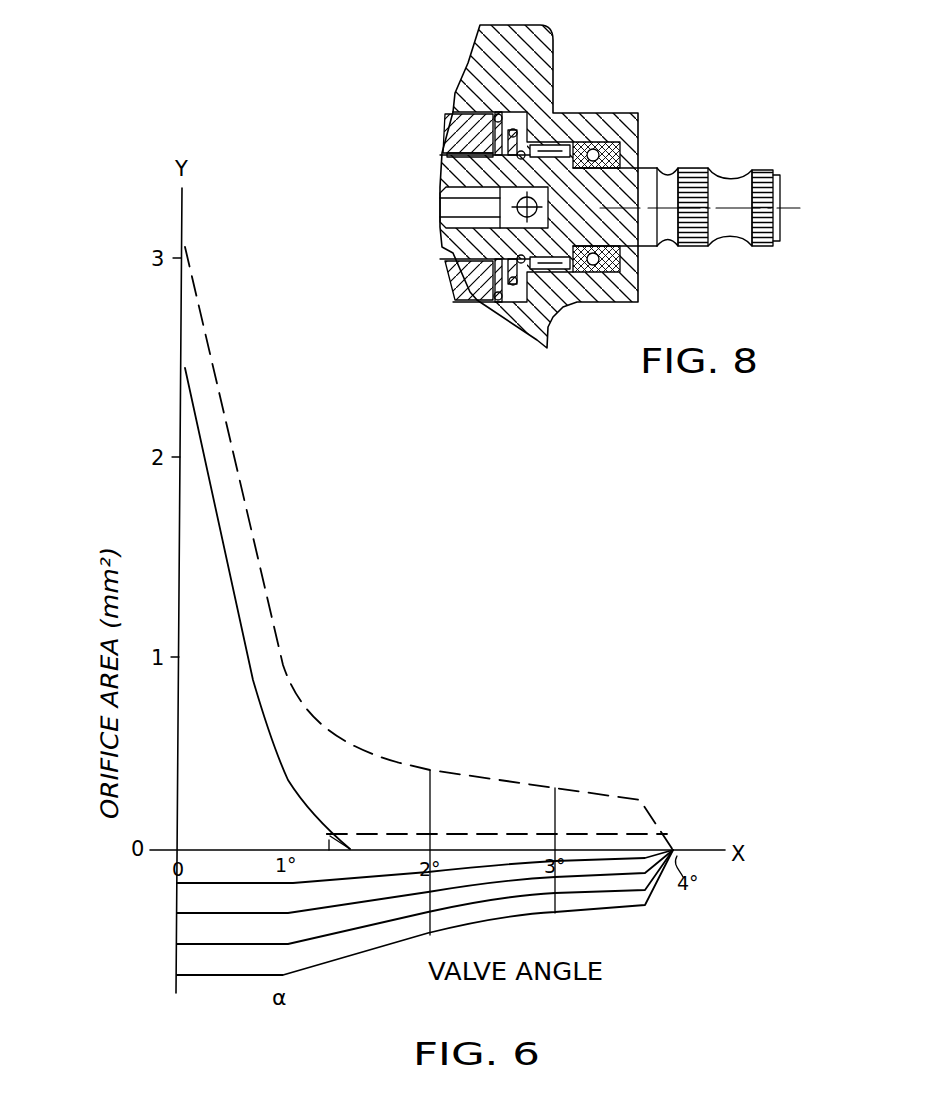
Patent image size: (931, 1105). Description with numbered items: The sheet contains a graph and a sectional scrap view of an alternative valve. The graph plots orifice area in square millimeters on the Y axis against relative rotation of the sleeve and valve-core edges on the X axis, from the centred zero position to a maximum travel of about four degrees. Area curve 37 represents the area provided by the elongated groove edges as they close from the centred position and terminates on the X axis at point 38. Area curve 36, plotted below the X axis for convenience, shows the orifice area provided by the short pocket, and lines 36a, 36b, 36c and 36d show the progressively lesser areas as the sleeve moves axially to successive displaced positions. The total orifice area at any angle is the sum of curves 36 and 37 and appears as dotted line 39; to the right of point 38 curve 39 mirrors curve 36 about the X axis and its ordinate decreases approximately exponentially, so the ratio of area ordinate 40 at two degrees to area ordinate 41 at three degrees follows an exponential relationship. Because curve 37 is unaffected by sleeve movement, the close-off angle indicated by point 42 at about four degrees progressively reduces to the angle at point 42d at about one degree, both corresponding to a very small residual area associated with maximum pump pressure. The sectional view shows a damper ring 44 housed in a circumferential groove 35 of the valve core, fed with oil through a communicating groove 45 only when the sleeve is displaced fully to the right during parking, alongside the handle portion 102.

In FIG. 8, the circumferential groove 35 is at (490, 163).
In FIG. 8, the damper ring 44 is at (480, 155).
In FIG. 8, the communicating groove 45 is at (477, 148).
In FIG. 8, the knurled handle 102 is at (647, 178).
In FIG. 6, the area curve 36 is at (378, 947).
In FIG. 6, the line 36a is at (218, 947).
In FIG. 6, the line 36b is at (213, 916).
In FIG. 6, the line 36c is at (213, 885).
In FIG. 6, the line 36d is at (227, 850).
In FIG. 6, the area curve 37 is at (223, 542).
In FIG. 6, the point 38 is at (353, 848).
In FIG. 6, the dotted line 39 is at (283, 663).
In FIG. 6, the area ordinate 40 is at (431, 822).
In FIG. 6, the area ordinate 41 is at (556, 822).
In FIG. 6, the point 42 is at (665, 837).
In FIG. 6, the point 42d is at (327, 835).